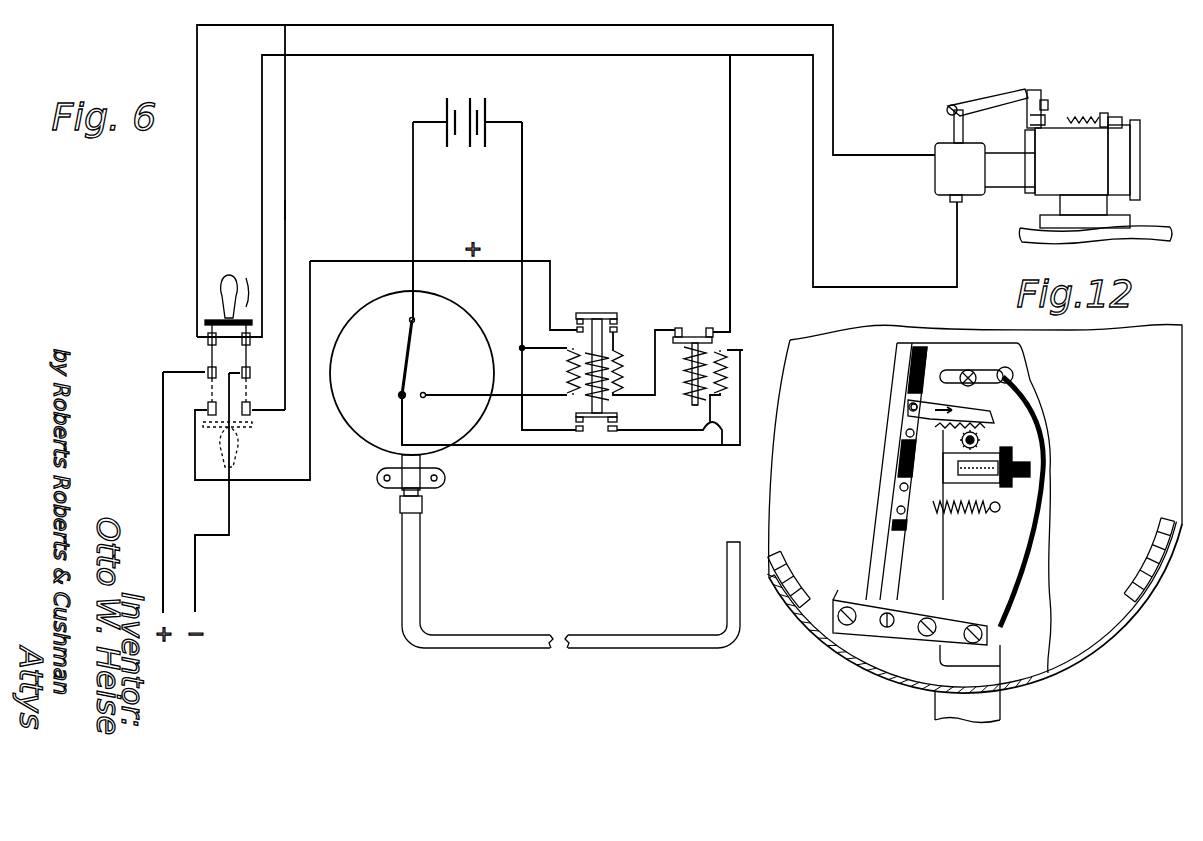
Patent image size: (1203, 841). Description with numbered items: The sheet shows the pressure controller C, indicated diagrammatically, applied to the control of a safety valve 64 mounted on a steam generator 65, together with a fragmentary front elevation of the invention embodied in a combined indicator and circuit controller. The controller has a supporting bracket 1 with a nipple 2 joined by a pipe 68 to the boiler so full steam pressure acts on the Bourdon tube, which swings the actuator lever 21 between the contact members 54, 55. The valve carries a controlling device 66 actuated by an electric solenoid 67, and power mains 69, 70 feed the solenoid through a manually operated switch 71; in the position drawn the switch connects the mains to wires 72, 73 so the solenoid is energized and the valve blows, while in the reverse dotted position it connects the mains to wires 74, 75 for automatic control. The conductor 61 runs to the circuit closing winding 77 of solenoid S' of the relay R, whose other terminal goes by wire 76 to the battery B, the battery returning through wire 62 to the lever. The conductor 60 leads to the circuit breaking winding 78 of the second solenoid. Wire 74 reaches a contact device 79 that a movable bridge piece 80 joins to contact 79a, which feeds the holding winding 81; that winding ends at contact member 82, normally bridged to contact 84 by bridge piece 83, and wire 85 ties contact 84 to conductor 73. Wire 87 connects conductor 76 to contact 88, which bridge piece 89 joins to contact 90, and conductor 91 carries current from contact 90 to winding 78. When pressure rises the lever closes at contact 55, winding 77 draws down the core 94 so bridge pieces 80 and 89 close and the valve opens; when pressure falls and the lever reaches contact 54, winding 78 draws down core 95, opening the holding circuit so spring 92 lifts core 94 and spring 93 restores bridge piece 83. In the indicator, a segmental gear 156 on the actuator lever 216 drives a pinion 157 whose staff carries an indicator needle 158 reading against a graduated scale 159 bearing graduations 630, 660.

In FIG. 6, the supporting bracket 1 is at (417, 470).
In FIG. 6, the nipple 2 is at (420, 495).
In FIG. 6, the actuator lever 21 is at (412, 362).
In FIG. 6, the contact member 54 is at (400, 393).
In FIG. 6, the contact member 55 is at (424, 393).
In FIG. 6, the conductor 60 is at (379, 420).
In FIG. 6, the conductor 61 is at (453, 393).
In FIG. 6, the wire 62 is at (413, 280).
In FIG. 6, the safety valve 64 is at (1062, 170).
In FIG. 6, the steam generator 65 is at (1132, 228).
In FIG. 6, the controlling device 66 is at (1047, 105).
In FIG. 6, the electric solenoid 67 is at (960, 153).
In FIG. 6, the pipe 68 is at (640, 638).
In FIG. 6, the power main 69 is at (164, 527).
In FIG. 6, the power main 70 is at (196, 568).
In FIG. 6, the manually operated switch 71 is at (233, 279).
In FIG. 6, the wire 72 is at (211, 361).
In FIG. 6, the wire 73 is at (262, 205).
In FIG. 6, the wire 74 is at (256, 482).
In FIG. 6, the wire 75 is at (266, 412).
In FIG. 6, the wire 76 is at (522, 200).
In FIG. 6, the circuit closing winding 77 is at (567, 370).
In FIG. 6, the circuit breaking winding 78 is at (723, 363).
In FIG. 6, the contact device 79 is at (579, 325).
In FIG. 6, the contact 79a is at (618, 325).
In FIG. 6, the movable bridge piece 80 is at (598, 313).
In FIG. 6, the holding winding 81 is at (617, 372).
In FIG. 6, the contact member 82 is at (678, 327).
In FIG. 6, the movable bridge piece 83 is at (694, 337).
In FIG. 6, the contact 84 is at (712, 327).
In FIG. 6, the wire 85 is at (730, 190).
In FIG. 6, the wire 87 is at (522, 417).
In FIG. 6, the contact 88 is at (579, 432).
In FIG. 6, the bridge piece 89 is at (603, 418).
In FIG. 6, the contact 90 is at (613, 432).
In FIG. 6, the conductor 91 is at (720, 447).
In FIG. 6, the spring 92 is at (604, 392).
In FIG. 6, the spring 93 is at (686, 397).
In FIG. 6, the core 94 is at (590, 404).
In FIG. 6, the core 95 is at (695, 407).
In FIG. 6, the battery B is at (490, 108).
In FIG. 6, the controller C is at (426, 395).
In FIG. 6, the relay R is at (646, 259).
In FIG. 6, the solenoid S' is at (581, 354).
In FIG. 12, the segmental gear 156 is at (985, 410).
In FIG. 12, the pinion 157 is at (980, 441).
In FIG. 12, the indicator needle 158 is at (842, 570).
In FIG. 12, the graduated scale 159 is at (784, 553).
In FIG. 12, the actuator lever 216 is at (893, 543).
In FIG. 12, the scale graduation 630 is at (801, 579).
In FIG. 12, the scale graduation 660 is at (1139, 561).